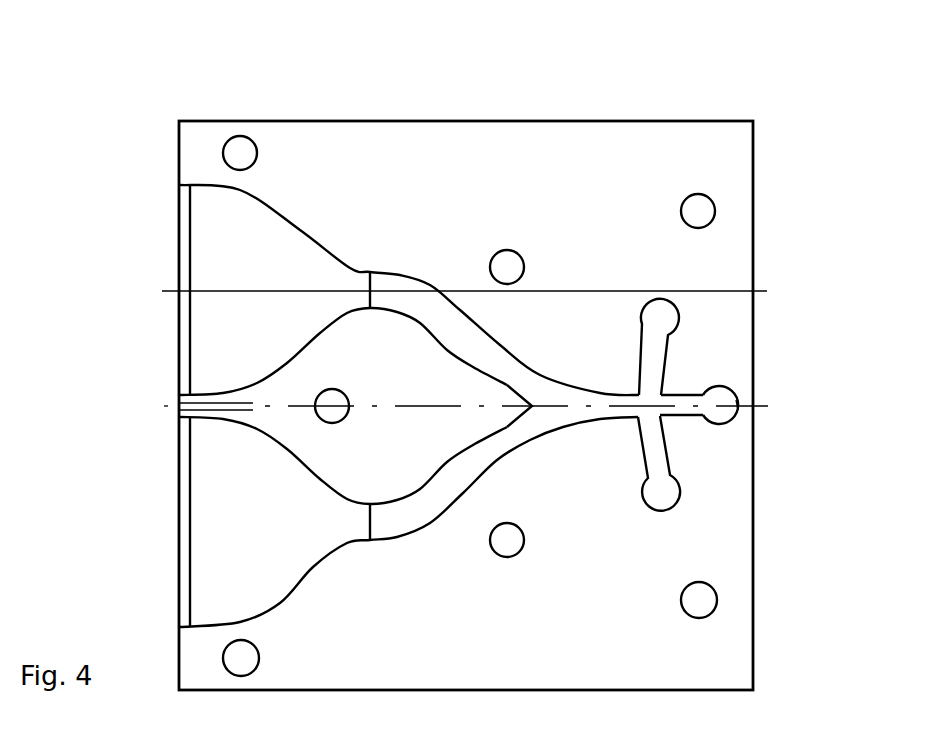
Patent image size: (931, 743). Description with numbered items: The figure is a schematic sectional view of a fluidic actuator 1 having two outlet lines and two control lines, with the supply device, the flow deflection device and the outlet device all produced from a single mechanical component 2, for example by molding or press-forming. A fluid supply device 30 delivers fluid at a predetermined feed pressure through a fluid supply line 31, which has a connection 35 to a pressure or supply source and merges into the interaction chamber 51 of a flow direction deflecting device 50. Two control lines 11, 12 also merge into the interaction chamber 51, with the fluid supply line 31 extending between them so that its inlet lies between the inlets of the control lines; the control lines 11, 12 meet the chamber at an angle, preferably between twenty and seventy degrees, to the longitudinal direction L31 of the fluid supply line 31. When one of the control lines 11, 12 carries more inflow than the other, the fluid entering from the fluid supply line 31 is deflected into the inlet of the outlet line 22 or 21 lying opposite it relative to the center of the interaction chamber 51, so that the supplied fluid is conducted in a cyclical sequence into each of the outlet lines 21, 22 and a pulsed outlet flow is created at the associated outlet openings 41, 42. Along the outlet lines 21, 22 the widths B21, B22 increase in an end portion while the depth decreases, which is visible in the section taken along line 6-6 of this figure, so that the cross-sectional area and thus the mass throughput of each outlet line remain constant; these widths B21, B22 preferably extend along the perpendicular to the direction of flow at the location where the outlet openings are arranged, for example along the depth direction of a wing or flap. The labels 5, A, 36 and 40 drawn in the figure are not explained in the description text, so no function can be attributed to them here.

The fluidic actuator 1 is at (560, 66).
The mechanical component 2 is at (535, 143).
The section line 5 is at (788, 405).
The section line 6- 6 is at (132, 292).
The central axis A is at (132, 406).
The control line 11 is at (648, 455).
The control line 12 is at (648, 357).
The outlet line 21 is at (468, 485).
The outlet line 22 is at (493, 355).
The fluid supply device 30 is at (690, 370).
The fluid supply line 31 is at (687, 410).
The connection 35 is at (318, 553).
The second outer channel wall 36 is at (295, 233).
The inlet structure 40 is at (140, 158).
The outlet opening 41 is at (151, 562).
The outlet opening 42 is at (155, 223).
The flow direction deflecting device 50 is at (565, 330).
The interaction chamber 51 is at (582, 413).
The width of outlet line 21 B21 is at (253, 429).
The width of outlet line 22 B22 is at (253, 196).
The longitudinal direction of the fluid supply line L31 is at (745, 398).